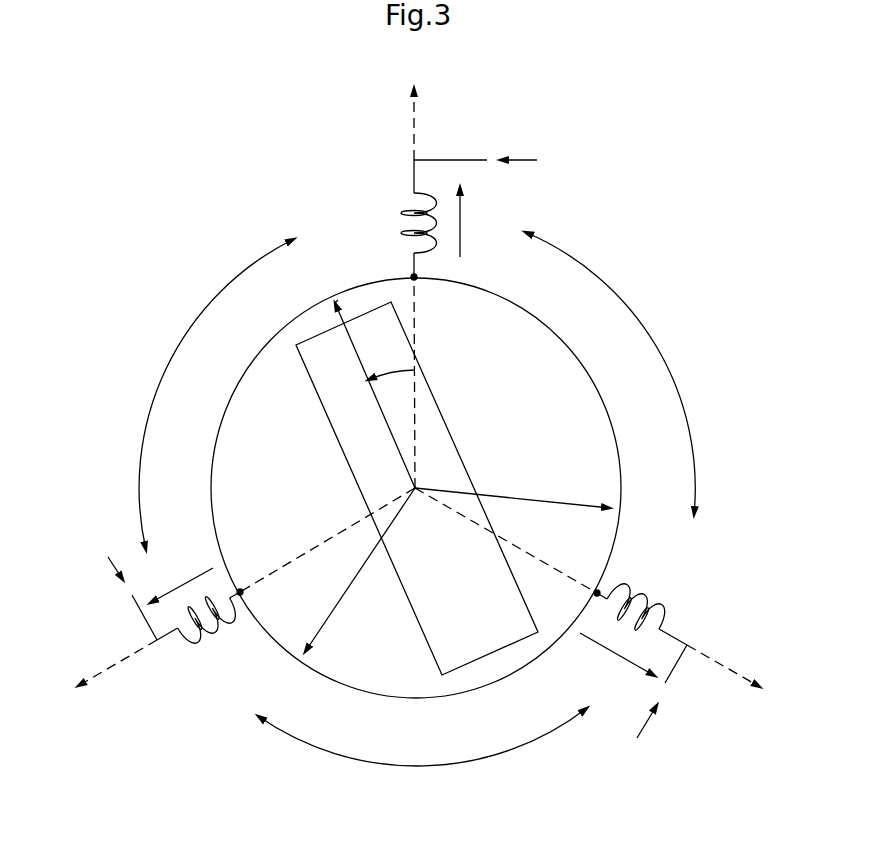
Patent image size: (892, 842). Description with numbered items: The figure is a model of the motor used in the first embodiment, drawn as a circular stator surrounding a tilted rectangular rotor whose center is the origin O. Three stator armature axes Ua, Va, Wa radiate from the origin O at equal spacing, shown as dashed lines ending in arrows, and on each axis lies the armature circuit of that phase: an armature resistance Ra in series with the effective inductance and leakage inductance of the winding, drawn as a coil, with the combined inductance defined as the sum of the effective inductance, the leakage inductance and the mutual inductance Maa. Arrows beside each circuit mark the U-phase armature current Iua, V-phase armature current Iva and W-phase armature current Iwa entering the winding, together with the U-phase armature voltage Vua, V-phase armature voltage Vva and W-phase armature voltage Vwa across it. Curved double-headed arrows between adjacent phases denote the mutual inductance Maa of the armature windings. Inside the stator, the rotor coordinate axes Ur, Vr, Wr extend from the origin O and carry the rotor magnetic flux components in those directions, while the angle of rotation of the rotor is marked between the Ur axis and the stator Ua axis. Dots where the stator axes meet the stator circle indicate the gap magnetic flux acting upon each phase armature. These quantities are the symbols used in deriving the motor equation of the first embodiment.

The U-phase stator axis / terminal Ua is at (416, 108).
The V-phase stator axis / terminal Va is at (106, 663).
The W-phase stator axis / terminal Wa is at (733, 666).
The U-phase armature current Iua is at (520, 147).
The V-phase armature current Iva is at (97, 562).
The W-phase armature current Iwa is at (650, 733).
The U-phase armature voltage Vua is at (480, 222).
The V-phase armature voltage Vva is at (181, 582).
The W-phase armature voltage Vwa is at (617, 662).
The armature resistance Ra is at (429, 445).
The U-phase rotor axis Ur is at (324, 286).
The V-phase rotor axis Vr is at (292, 668).
The W-phase rotor axis Wr is at (630, 511).
The mutual inductance of armature windings Maa is at (416, 515).
The origin / rotor center O is at (419, 501).